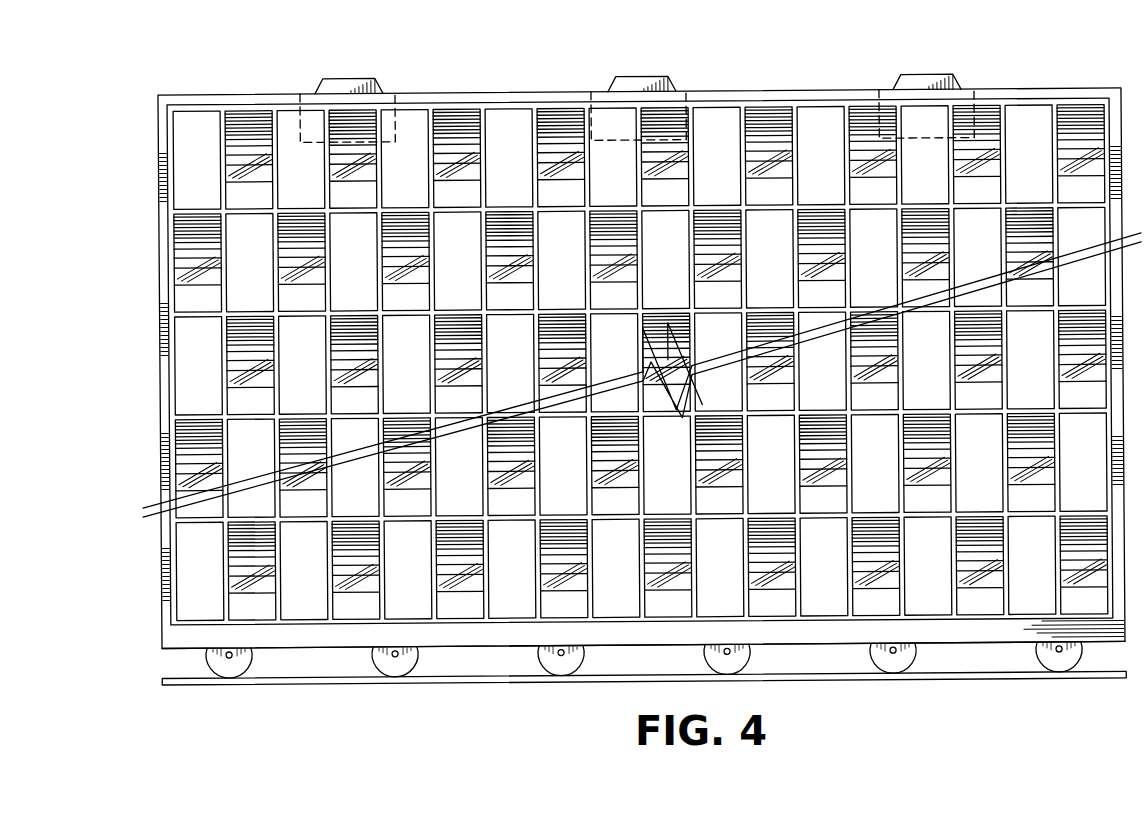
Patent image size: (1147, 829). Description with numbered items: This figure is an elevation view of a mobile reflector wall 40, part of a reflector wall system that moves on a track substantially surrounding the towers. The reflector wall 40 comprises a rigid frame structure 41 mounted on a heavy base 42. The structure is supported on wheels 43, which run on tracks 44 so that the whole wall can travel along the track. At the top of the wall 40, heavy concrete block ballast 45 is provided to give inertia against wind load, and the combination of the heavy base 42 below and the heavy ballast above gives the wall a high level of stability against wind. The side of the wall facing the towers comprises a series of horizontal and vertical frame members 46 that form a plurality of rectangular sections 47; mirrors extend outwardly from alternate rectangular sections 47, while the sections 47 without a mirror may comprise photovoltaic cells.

The reflector wall 40 is at (1027, 80).
The rigid frame structure 41 is at (745, 93).
The heavy base 42 is at (983, 634).
The wheels 43 is at (250, 655).
The tracks 44 is at (470, 683).
The concrete block ballast 45 is at (640, 80).
The frame members 46 is at (560, 209).
The rectangular sections 47 is at (458, 131).